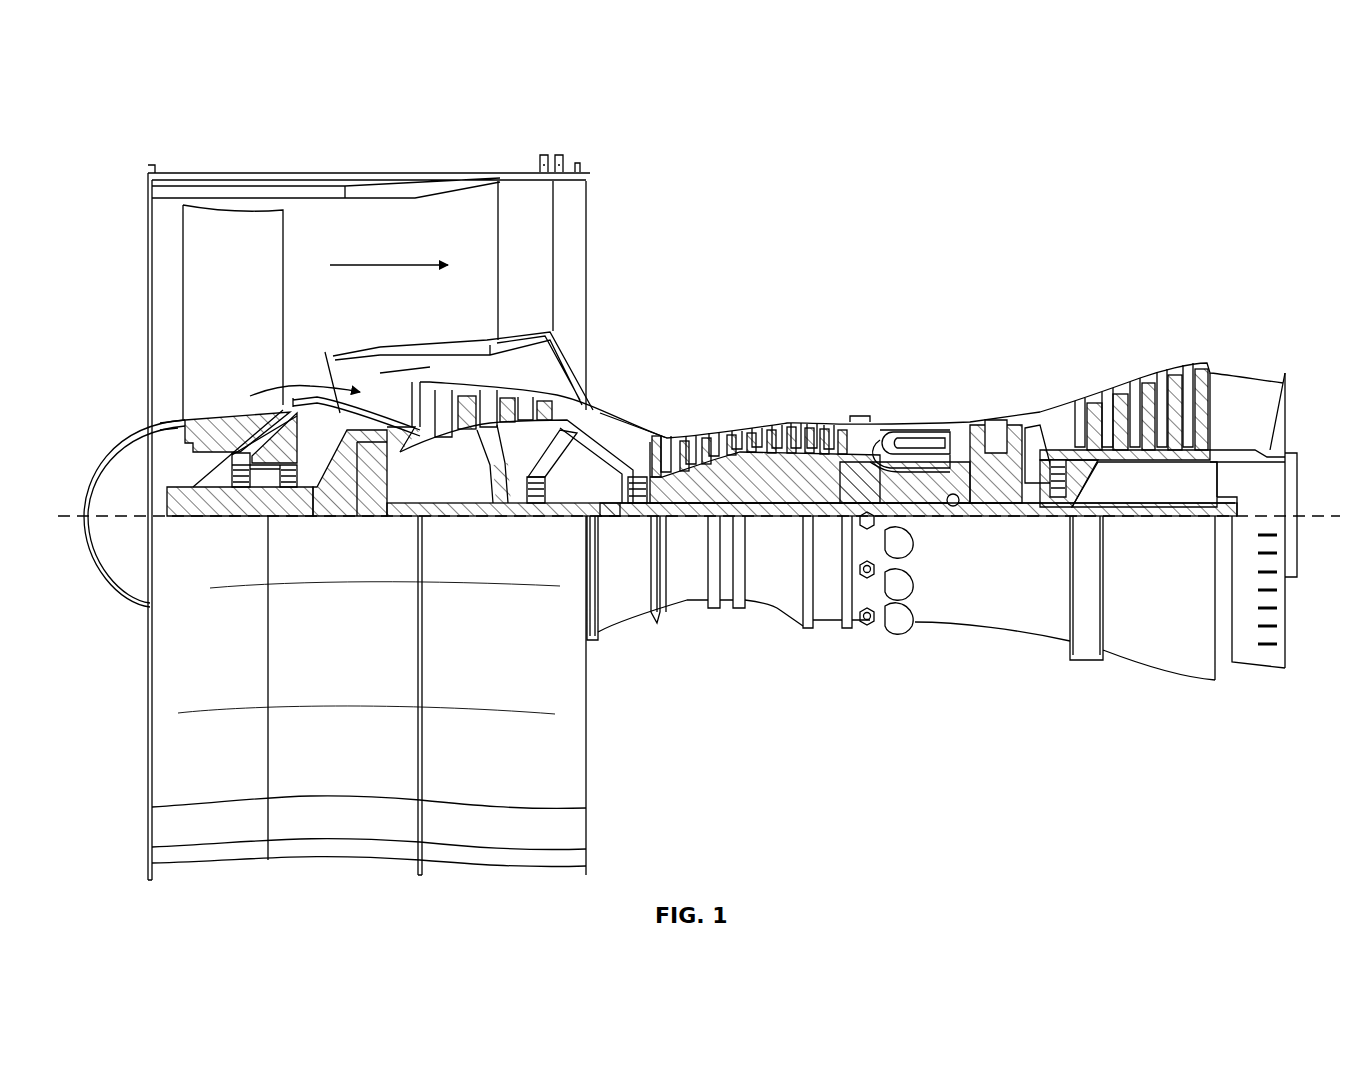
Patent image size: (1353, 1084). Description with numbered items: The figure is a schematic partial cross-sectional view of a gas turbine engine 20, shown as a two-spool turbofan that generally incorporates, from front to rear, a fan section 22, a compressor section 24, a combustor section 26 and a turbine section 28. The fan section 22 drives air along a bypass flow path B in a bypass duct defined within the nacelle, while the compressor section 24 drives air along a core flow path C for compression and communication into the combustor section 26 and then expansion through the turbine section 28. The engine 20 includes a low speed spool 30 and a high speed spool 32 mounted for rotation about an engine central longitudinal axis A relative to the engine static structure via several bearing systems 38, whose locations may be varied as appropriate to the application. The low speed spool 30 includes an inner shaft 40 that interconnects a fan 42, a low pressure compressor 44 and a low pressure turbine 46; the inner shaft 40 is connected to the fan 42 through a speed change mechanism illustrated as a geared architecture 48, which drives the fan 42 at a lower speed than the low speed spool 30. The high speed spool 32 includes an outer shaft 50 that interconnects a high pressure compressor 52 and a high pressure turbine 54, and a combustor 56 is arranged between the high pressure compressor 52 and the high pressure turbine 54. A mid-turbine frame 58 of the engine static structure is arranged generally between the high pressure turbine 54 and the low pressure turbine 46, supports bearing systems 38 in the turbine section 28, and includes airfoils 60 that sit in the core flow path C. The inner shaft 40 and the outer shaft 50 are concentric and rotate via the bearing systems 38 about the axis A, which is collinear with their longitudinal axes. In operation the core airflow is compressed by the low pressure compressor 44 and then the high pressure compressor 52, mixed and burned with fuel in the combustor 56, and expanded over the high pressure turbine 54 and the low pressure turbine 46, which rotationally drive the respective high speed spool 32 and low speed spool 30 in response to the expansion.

The gas turbine engine 20 is at (1178, 147).
The fan section 22 is at (393, 150).
The compressor section 24 is at (885, 293).
The combustor section 26 is at (968, 293).
The turbine section 28 is at (1228, 293).
The low speed spool 30 is at (792, 521).
The high speed spool 32 is at (846, 470).
The bearing systems 38 is at (246, 488).
The inner shaft 40 is at (606, 507).
The fan 42 is at (246, 298).
The low pressure compressor 44 is at (505, 395).
The low pressure turbine 46 is at (1152, 390).
The geared architecture 48 is at (372, 486).
The outer shaft 50 is at (962, 498).
The high pressure compressor 52 is at (756, 490).
The high pressure turbine 54 is at (1002, 412).
The combustor 56 is at (920, 447).
The mid-turbine frame 58 is at (1040, 412).
The airfoils 60 is at (1040, 430).
The engine central longitudinal axis A is at (1308, 516).
The bypass flow path B is at (395, 265).
The core flow path C is at (272, 398).